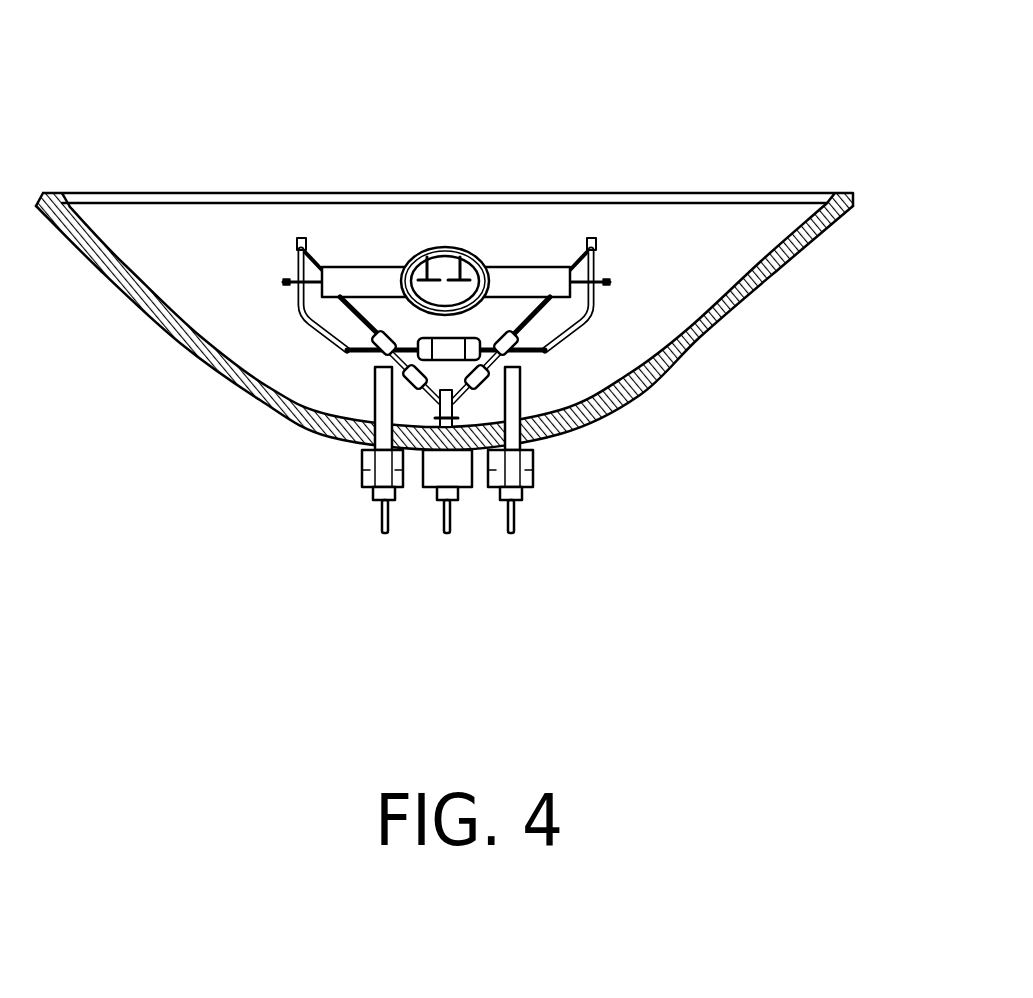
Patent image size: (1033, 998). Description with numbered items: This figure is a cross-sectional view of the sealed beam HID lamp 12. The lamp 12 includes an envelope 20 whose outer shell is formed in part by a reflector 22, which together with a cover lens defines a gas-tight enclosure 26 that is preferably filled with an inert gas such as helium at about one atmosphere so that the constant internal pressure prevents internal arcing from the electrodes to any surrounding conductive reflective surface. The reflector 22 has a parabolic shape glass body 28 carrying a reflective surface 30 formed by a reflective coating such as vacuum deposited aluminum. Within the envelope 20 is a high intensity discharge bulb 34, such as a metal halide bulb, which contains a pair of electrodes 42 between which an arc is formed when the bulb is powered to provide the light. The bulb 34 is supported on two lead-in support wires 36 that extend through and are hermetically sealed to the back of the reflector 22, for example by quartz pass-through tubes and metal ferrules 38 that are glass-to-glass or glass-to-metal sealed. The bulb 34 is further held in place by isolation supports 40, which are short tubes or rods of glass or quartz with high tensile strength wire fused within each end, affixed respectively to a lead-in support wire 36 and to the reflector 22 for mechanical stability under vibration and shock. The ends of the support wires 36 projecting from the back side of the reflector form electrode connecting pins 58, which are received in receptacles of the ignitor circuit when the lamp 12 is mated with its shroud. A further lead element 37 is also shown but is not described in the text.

The sealed beam HID lamp 12 is at (742, 88).
The envelope 20 is at (178, 342).
The reflector 22 is at (800, 253).
The gas-tight enclosure 26 is at (175, 232).
The parabolic shape glass body 28 is at (770, 257).
The reflective surface 30 is at (745, 285).
The high intensity discharge bulb 34 is at (480, 256).
The lead-in support wire 36 is at (573, 332).
The lead wire 37 is at (520, 399).
The metal ferrule 38 is at (365, 472).
The isolation support 40 is at (405, 363).
The electrode 42 is at (430, 258).
The electrode connecting pin 58 is at (517, 523).